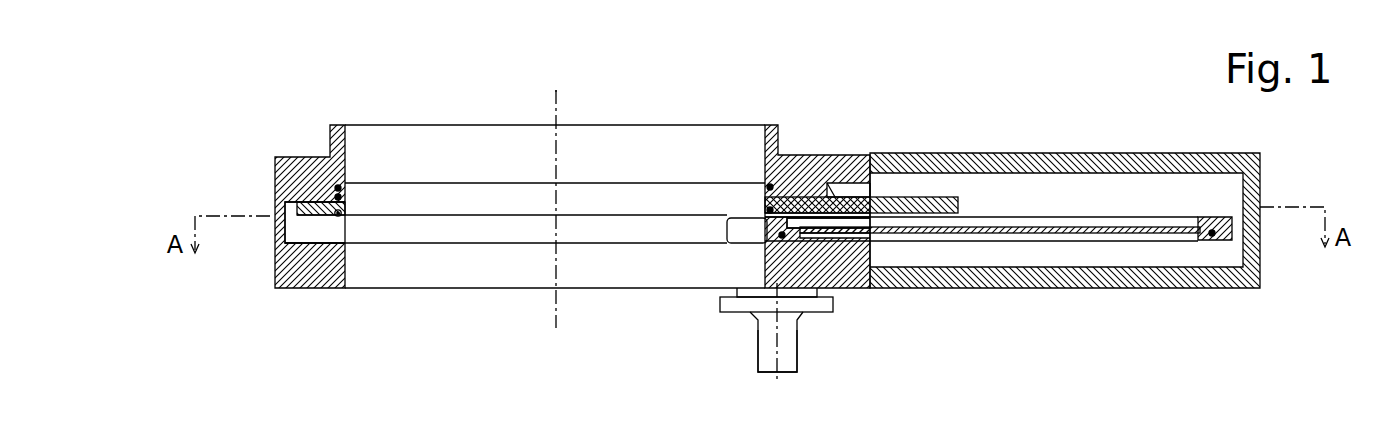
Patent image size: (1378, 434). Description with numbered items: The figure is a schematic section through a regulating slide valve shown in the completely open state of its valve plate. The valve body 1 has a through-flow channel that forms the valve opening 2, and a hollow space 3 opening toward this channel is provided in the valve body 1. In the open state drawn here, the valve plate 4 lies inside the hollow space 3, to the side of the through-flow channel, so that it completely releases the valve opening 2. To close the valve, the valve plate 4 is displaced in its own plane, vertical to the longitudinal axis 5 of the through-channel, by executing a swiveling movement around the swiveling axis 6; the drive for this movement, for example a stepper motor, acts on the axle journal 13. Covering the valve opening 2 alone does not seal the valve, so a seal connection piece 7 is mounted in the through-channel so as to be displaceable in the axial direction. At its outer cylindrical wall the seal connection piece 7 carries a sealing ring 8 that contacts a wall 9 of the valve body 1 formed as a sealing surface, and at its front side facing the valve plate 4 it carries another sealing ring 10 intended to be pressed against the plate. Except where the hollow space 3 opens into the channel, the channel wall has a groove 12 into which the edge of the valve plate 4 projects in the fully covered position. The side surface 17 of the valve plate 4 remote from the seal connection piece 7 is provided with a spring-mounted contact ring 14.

The valve body 1 is at (818, 163).
The valve opening 2 is at (628, 137).
The hollow space 3 is at (1095, 183).
The valve plate 4 is at (1015, 227).
The longitudinal axis 5 is at (558, 147).
The swiveling axis 6 is at (778, 347).
The seal connection piece 7 is at (347, 208).
The sealing ring 8 is at (338, 186).
The wall 9 is at (336, 196).
The sealing ring 10 is at (340, 216).
The groove 12 is at (295, 233).
The axle journal 13 is at (765, 358).
The contact ring 14 is at (1212, 236).
The side surface 17 is at (1060, 240).